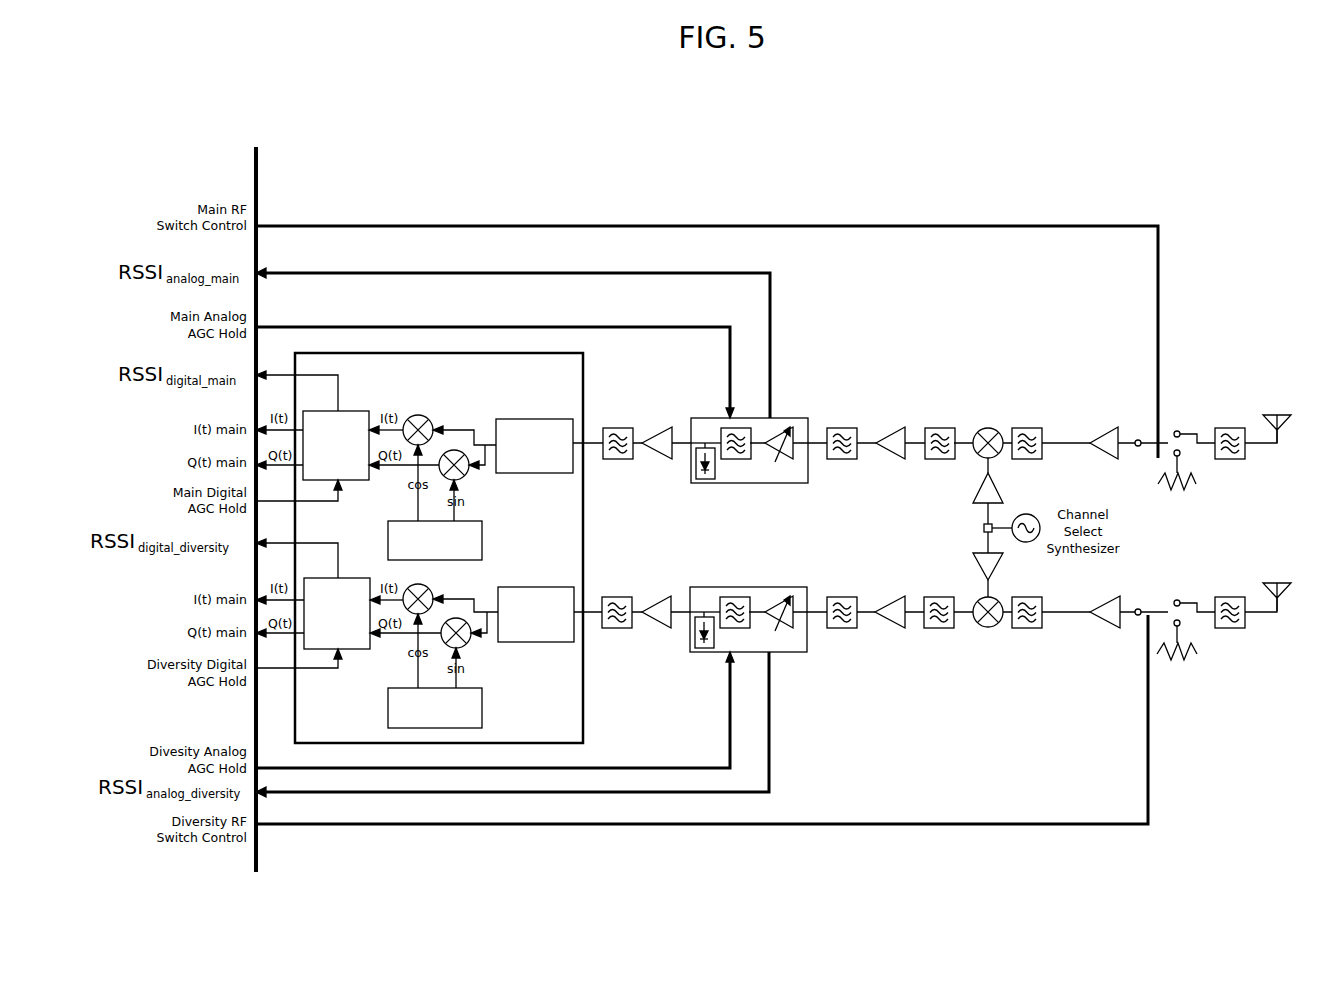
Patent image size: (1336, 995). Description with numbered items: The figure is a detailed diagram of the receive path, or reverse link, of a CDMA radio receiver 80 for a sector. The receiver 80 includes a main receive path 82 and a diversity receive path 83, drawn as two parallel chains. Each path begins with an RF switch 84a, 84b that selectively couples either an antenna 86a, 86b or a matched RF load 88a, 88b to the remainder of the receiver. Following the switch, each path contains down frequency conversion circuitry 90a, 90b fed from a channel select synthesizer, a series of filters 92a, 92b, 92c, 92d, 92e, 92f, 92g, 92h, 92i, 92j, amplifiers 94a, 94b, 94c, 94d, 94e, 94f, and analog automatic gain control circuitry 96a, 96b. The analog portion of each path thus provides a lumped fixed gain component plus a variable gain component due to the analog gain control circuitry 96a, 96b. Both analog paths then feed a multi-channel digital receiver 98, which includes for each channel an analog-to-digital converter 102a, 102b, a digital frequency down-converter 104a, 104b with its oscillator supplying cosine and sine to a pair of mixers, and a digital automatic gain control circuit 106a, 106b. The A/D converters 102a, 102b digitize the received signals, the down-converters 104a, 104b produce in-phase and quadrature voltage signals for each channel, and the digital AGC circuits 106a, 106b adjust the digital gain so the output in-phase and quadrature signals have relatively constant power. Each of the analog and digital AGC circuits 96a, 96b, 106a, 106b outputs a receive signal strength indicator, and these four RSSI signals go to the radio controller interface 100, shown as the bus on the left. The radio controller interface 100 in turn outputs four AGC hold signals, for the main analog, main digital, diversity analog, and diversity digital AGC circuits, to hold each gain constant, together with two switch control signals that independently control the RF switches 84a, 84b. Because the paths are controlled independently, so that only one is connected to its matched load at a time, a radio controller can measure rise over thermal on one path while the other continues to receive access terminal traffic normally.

The CDMA radio receiver 80 is at (1005, 123).
The main receive path 82 is at (925, 384).
The diversity receive path 83 is at (925, 666).
The RF switch 84a is at (1167, 440).
The RF switch 84b is at (1157, 603).
The antenna 86a is at (1243, 404).
The antenna 86b is at (1243, 576).
The matched RF load 88a is at (1177, 484).
The matched RF load 88b is at (1177, 654).
The down frequency conversion circuitry 90a is at (966, 482).
The down frequency conversion circuitry 90b is at (958, 562).
The filter 92a is at (1025, 459).
The filter 92b is at (942, 428).
The filter 92c is at (842, 459).
The filter 92d is at (618, 459).
The filter 92e is at (1027, 628).
The filter 92f is at (939, 628).
The filter 92g is at (842, 628).
The filter 92h is at (617, 628).
The filter 92i is at (1240, 459).
The filter 92j is at (1240, 628).
The amplifier 94a is at (1108, 445).
The amplifier 94b is at (893, 433).
The amplifier 94c is at (660, 433).
The amplifier 94d is at (1110, 616).
The amplifier 94e is at (897, 617).
The amplifier 94f is at (660, 614).
The analog automatic gain control circuitry 96a is at (746, 476).
The analog automatic gain control circuitry 96b is at (752, 593).
The multi-channel digital receiver 98 is at (439, 548).
The radio controller interface 100 is at (258, 162).
The analog-to-digital converter 102a is at (534, 446).
The analog-to-digital converter 102b is at (536, 614).
The digital frequency down-converter 104a is at (504, 525).
The digital frequency down-converter 104b is at (504, 697).
The digital automatic gain control circuit 106a is at (336, 445).
The digital automatic gain control circuit 106b is at (337, 613).